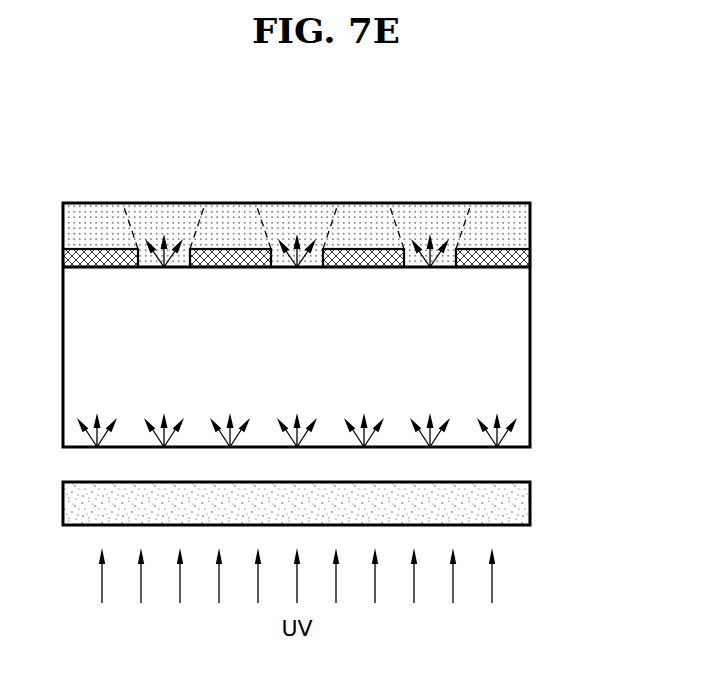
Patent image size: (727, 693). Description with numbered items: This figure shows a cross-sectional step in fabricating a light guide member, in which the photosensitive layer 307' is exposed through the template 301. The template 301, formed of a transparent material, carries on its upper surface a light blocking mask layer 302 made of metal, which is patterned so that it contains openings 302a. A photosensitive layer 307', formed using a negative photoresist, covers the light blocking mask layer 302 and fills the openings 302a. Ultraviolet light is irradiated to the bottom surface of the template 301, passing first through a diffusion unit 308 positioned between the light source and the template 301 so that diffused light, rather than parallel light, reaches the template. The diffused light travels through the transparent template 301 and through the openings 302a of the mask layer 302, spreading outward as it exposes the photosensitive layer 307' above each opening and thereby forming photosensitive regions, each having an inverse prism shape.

The template 301 is at (522, 358).
The light blocking mask layer 302 is at (528, 257).
The openings 302a is at (182, 268).
The photosensitive layer 307' is at (342, 234).
The diffusion unit 308 is at (520, 503).